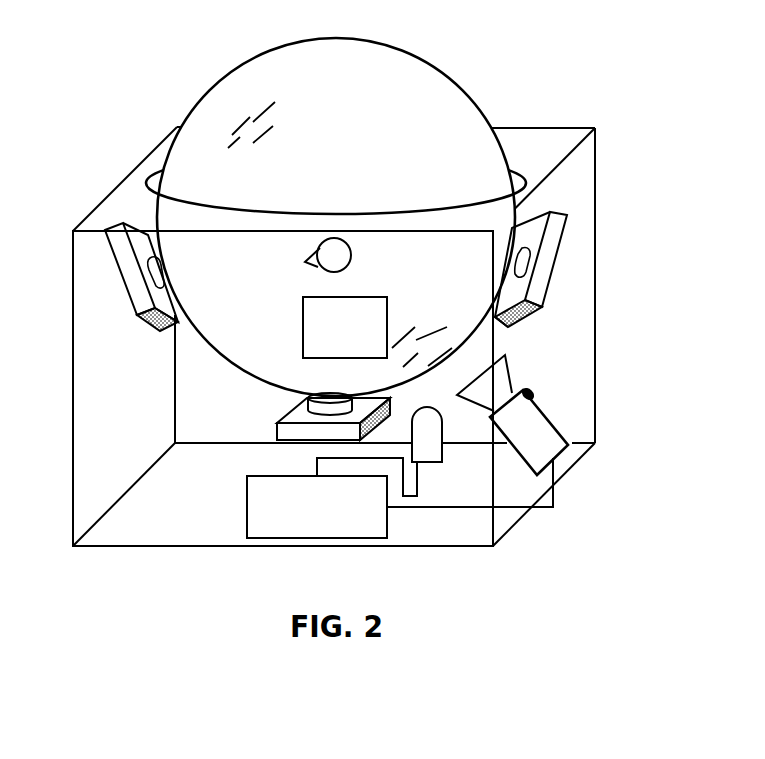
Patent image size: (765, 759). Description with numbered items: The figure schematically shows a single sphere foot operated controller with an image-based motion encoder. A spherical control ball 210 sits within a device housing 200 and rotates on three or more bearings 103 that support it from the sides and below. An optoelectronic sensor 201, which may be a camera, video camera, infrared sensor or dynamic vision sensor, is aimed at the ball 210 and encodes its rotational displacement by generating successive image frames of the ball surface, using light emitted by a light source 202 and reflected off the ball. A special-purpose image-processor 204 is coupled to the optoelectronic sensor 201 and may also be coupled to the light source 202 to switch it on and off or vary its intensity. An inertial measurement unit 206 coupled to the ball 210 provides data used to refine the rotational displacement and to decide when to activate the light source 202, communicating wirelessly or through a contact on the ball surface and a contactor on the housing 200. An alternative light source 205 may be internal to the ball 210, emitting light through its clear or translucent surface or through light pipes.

The device housing 200 is at (120, 184).
The spherical control ball 210 is at (345, 190).
The bearings 103 is at (141, 318).
The internal light source 205 is at (317, 248).
The inertial measurement unit (IMU) 206 is at (303, 321).
The optoelectronic sensor 201 is at (516, 406).
The light source 202 is at (443, 455).
The special-purpose image-processor 204 is at (247, 521).